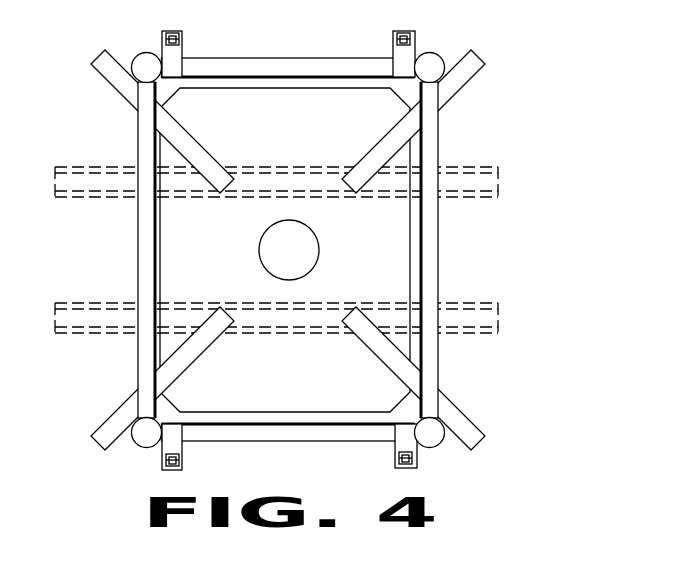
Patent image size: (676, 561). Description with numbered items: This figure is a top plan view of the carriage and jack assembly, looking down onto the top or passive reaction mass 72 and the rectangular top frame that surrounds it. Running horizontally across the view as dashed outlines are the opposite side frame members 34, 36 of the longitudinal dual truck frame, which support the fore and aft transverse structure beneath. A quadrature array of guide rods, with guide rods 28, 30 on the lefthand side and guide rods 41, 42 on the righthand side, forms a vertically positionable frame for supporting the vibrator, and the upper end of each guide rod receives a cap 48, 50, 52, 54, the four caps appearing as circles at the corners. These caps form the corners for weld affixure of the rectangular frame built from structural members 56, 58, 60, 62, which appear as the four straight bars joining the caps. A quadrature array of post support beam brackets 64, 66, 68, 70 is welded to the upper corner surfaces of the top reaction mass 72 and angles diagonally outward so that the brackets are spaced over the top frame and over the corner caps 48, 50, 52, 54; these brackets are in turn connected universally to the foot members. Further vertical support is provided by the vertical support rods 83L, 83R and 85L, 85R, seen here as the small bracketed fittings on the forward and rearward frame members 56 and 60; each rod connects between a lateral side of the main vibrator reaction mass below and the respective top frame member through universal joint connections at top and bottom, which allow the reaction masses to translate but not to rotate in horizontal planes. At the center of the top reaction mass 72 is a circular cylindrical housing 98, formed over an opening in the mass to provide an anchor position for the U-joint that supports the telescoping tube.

The guide rod 28 is at (156, 447).
The guide rod 30 is at (443, 442).
The side frame member 34 is at (88, 338).
The side frame member 36 is at (91, 187).
The guide rod 41 is at (137, 58).
The guide rod 42 is at (436, 66).
The cap 48 is at (148, 433).
The cap 50 is at (145, 66).
The cap 52 is at (433, 447).
The cap 54 is at (458, 54).
The structural member 56 is at (288, 433).
The structural member 58 is at (143, 240).
The structural member 60 is at (290, 64).
The structural member 62 is at (433, 253).
The post support beam bracket 64 is at (177, 377).
The post support beam bracket 66 is at (177, 125).
The post support beam bracket 68 is at (443, 98).
The post support beam bracket 70 is at (442, 407).
The top reaction mass 72 is at (300, 141).
The vertical support rod 83L is at (178, 470).
The vertical support rod 83R is at (180, 33).
The vertical support rod 85L is at (400, 462).
The vertical support rod 85R is at (405, 33).
The cylindrical housing 98 is at (312, 255).